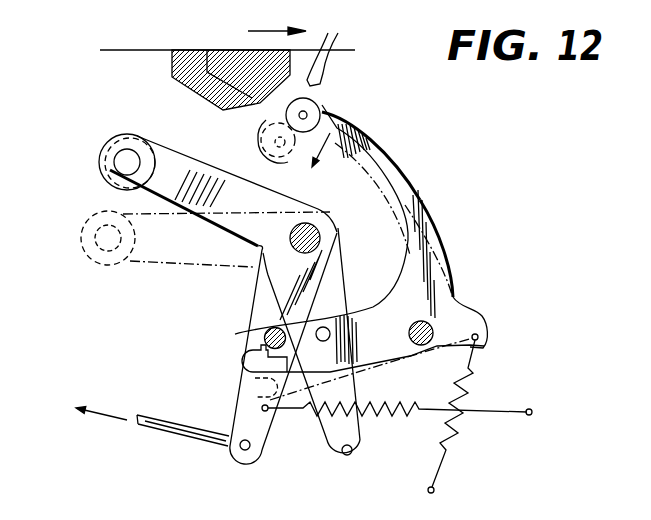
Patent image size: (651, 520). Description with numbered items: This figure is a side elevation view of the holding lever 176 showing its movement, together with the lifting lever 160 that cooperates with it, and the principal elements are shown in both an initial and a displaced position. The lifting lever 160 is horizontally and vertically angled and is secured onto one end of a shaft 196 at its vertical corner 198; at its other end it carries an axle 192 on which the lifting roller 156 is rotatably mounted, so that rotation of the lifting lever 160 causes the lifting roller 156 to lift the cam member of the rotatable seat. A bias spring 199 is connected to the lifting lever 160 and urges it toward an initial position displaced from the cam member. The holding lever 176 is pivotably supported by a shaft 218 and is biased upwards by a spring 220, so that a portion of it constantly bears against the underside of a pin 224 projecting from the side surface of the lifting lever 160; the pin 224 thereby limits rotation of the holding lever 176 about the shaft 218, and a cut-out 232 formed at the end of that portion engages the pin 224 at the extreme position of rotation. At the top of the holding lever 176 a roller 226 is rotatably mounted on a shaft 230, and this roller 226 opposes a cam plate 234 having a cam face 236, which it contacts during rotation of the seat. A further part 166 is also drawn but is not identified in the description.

The lifting roller 156 is at (130, 134).
The axle 192 is at (117, 163).
The vertical corner 198 is at (283, 247).
The lifting lever 160 is at (276, 300).
The pin 224 is at (268, 344).
The cut-out 232 is at (267, 412).
The actuating rod 166 is at (178, 433).
The bias spring 199 is at (398, 418).
The spring 220 is at (470, 397).
The shaft 218 is at (430, 323).
The holding lever 176 is at (417, 207).
The shaft 196 is at (318, 225).
The roller 226 is at (322, 100).
The shaft 230 is at (327, 125).
The cam plate 234 is at (226, 60).
The cam face 236 is at (338, 33).